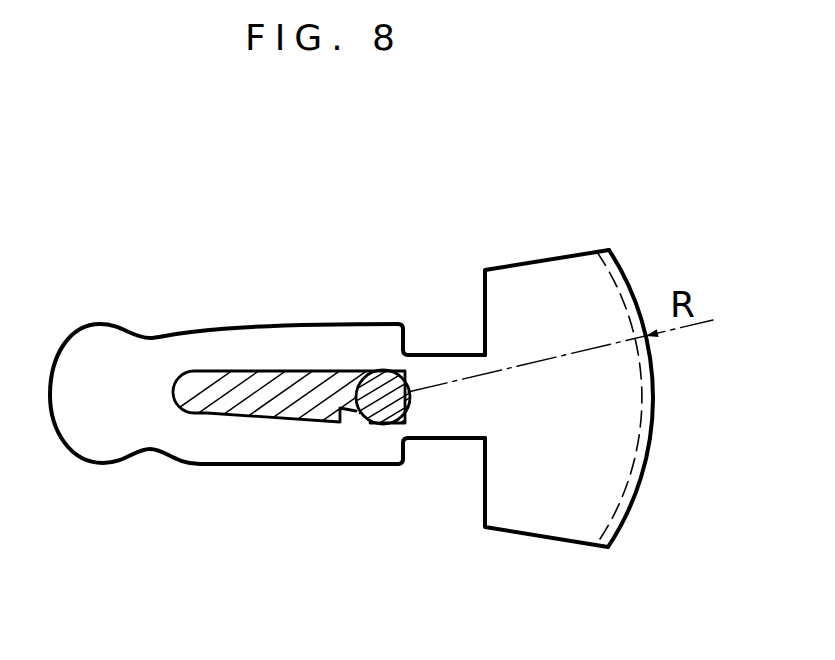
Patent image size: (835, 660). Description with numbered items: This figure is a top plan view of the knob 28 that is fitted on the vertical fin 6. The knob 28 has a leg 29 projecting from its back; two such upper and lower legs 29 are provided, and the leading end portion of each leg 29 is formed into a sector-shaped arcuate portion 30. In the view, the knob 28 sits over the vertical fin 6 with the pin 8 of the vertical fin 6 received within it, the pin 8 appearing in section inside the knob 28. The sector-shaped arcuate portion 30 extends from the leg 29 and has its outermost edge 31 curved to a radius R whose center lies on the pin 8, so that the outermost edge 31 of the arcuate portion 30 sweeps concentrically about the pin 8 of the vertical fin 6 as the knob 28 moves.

The knob 28 is at (90, 461).
The vertical fin 6 is at (242, 405).
The pin 8 is at (387, 377).
The leg 29 is at (427, 440).
The sector-shaped arcuate portion 30 is at (542, 537).
The outermost edge 31 is at (638, 490).